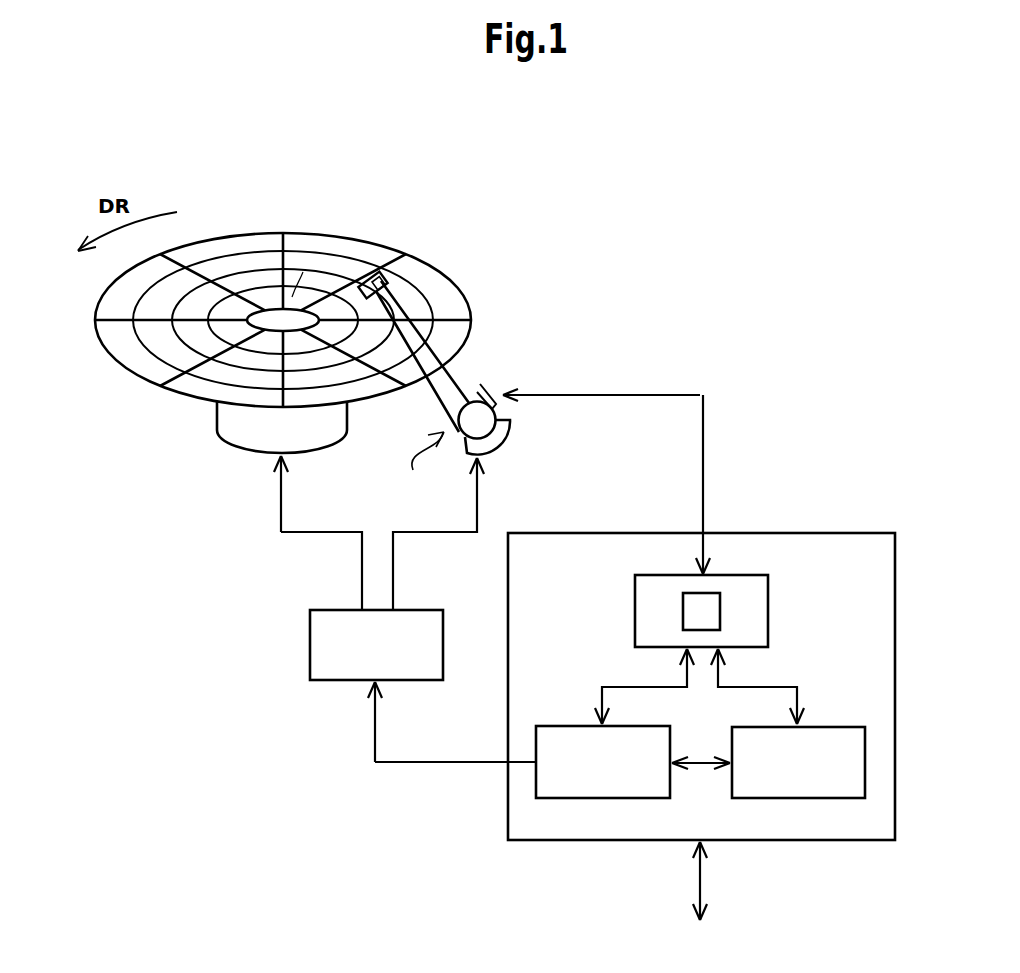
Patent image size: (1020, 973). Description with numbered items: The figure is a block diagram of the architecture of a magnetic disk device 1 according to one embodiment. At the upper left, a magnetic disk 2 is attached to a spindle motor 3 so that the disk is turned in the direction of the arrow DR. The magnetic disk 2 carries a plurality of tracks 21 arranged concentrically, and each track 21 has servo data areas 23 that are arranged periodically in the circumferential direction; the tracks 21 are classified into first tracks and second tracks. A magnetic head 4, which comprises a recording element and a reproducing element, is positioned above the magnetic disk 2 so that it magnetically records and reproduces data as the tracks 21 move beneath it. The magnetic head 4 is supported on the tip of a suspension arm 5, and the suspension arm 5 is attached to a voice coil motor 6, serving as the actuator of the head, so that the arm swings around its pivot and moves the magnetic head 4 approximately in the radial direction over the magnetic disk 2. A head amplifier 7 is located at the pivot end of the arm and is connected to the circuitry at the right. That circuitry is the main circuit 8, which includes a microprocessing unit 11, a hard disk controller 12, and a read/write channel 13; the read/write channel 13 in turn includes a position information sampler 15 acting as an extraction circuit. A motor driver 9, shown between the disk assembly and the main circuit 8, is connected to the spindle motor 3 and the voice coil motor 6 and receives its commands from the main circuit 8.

The magnetic disk device 1 is at (699, 194).
The magnetic disk 2 is at (223, 253).
The tracks 21 is at (292, 297).
The servo data areas 23 is at (167, 373).
The spindle motor 3 is at (237, 436).
The magnetic head 4 is at (368, 270).
The suspension arm 5 is at (428, 273).
The voice coil motor 6 is at (413, 470).
The head amplifier 7 is at (490, 385).
The main circuit 8 is at (830, 533).
The motor driver 9 is at (310, 648).
The microprocessing unit 11 is at (564, 725).
The hard disk controller 12 is at (829, 726).
The read/write channel 13 is at (770, 598).
The position information sampler 15 is at (683, 605).